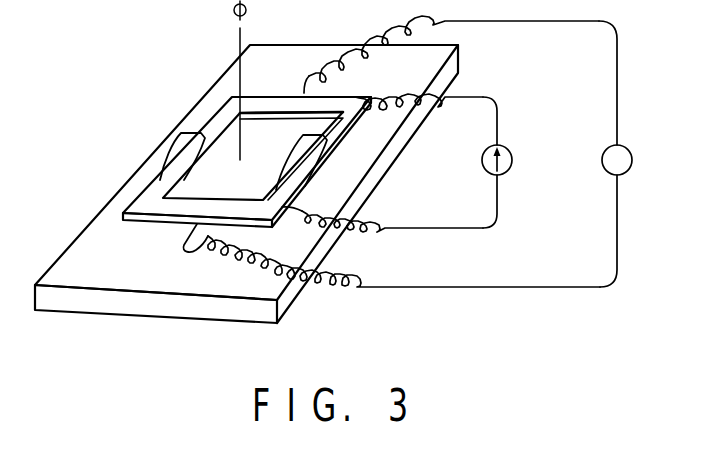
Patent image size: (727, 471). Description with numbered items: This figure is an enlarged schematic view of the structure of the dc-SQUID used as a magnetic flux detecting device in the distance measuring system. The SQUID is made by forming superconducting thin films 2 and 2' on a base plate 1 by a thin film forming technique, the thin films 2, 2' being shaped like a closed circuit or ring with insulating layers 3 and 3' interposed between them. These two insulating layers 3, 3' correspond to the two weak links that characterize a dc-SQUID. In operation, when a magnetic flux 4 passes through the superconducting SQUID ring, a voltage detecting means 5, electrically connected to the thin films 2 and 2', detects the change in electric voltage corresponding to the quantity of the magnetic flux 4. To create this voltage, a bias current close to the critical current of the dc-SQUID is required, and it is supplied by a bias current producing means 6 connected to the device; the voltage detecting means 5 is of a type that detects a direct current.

The base plate 1 is at (122, 306).
The superconducting thin film 2 is at (247, 183).
The superconducting thin film 2' is at (291, 128).
The insulating layer 3 is at (310, 165).
The insulating layer 3' is at (197, 164).
The magnetic flux 4 is at (238, 44).
The voltage detecting means 5 is at (628, 150).
The bias current producing means 6 is at (509, 151).